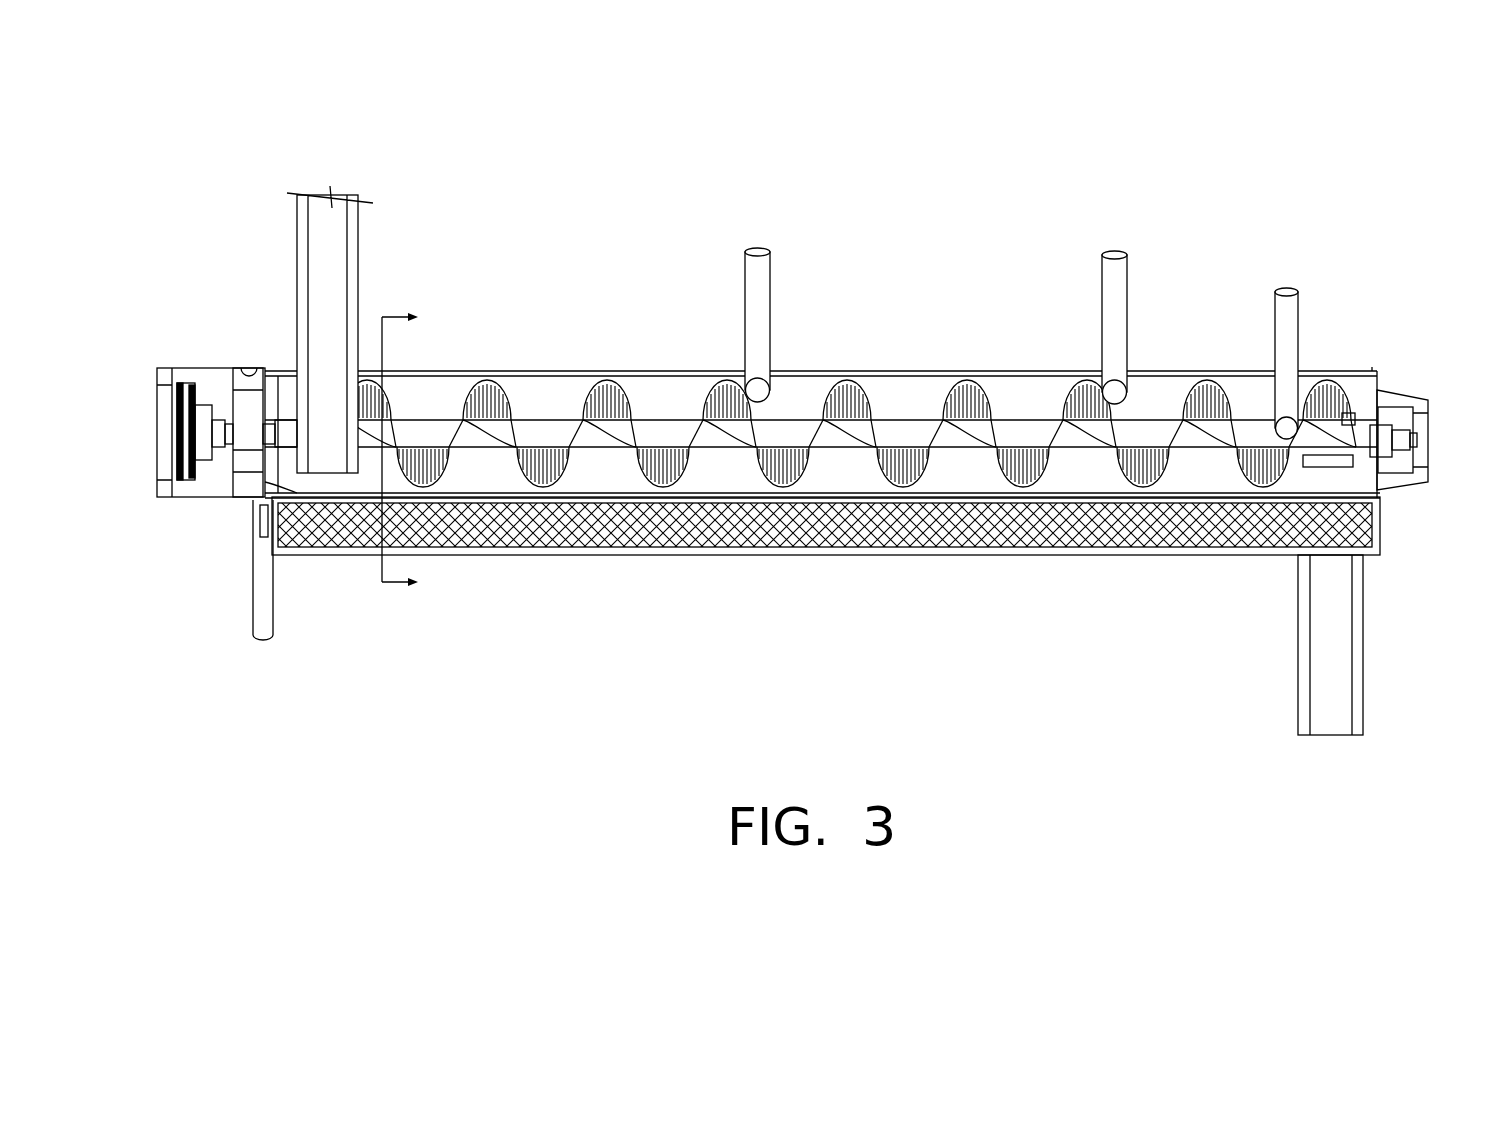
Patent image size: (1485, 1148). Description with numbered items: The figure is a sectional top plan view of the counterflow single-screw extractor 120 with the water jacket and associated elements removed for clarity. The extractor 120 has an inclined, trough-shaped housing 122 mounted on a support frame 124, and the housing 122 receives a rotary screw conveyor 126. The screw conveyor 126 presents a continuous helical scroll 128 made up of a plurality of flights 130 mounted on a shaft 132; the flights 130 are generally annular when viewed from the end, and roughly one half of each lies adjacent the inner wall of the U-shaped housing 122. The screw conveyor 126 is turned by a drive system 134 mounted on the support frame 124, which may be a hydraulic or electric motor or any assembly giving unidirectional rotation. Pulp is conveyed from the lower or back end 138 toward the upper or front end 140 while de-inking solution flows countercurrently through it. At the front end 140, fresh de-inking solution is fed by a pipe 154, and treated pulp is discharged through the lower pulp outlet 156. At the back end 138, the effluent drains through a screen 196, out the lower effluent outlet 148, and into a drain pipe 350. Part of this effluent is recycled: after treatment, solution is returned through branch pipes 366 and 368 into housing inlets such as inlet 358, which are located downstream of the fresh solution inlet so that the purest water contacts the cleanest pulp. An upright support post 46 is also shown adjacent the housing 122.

The support post 46 is at (358, 272).
The counterflow single-screw extractor 120 is at (888, 240).
The trough-shaped housing 122 is at (866, 362).
The support frame 124 is at (220, 436).
The rotary screw conveyor 126 is at (1148, 414).
The continuous helical scroll 128 is at (794, 458).
The flights 130 is at (620, 395).
The shaft 132 is at (962, 450).
The drive system 134 is at (190, 483).
The back end 138 is at (244, 500).
The front end 140 is at (1378, 384).
The effluent outlet 148 is at (248, 372).
The pipe 154 is at (1298, 292).
The pulp outlet 156 is at (1360, 463).
The screen 196 is at (302, 540).
The drain pipe 350 is at (273, 638).
The recycled solution inlet 358 is at (1297, 663).
The branch pipe 366 is at (1127, 254).
The branch pipe 368 is at (770, 250).